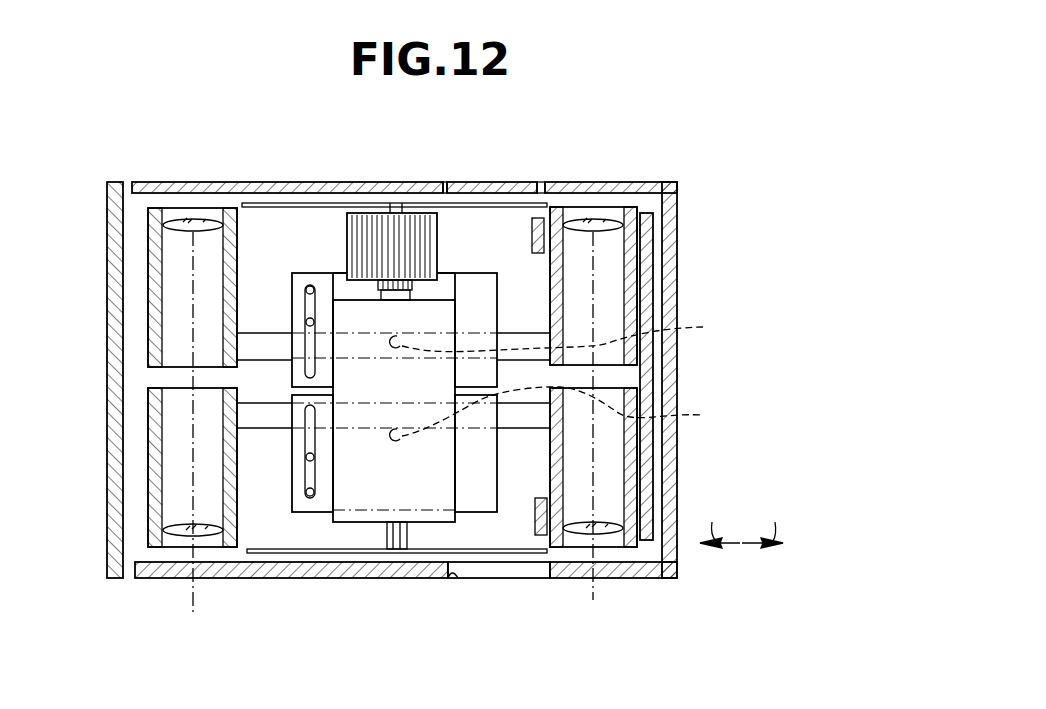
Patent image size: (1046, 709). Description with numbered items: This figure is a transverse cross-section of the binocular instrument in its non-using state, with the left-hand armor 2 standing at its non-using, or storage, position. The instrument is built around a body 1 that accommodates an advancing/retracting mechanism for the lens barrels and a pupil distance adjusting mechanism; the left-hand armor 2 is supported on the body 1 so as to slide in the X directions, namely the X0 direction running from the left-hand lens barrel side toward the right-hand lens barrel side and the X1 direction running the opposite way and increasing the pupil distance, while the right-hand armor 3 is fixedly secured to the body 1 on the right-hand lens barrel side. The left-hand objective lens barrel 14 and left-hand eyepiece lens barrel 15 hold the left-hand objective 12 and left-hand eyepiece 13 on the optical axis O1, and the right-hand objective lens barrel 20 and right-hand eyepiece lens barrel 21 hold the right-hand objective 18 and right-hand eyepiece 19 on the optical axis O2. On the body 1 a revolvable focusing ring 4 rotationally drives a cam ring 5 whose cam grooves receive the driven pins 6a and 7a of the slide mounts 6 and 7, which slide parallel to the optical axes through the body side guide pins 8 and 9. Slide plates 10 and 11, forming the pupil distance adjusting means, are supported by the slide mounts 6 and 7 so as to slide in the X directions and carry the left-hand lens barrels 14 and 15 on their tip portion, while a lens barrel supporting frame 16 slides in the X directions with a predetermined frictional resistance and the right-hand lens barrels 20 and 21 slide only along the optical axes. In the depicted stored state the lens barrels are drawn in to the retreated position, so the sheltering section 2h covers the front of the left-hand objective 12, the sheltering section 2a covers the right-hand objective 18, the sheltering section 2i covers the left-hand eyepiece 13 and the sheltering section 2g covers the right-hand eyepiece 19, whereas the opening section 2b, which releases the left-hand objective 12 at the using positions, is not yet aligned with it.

The binocular instrument body 1 is at (300, 204).
The left-hand armor 2 is at (406, 182).
The sheltering section 2a is at (160, 578).
The opening section 2b is at (458, 578).
The sheltering section 2g is at (165, 182).
The sheltering section 2h is at (633, 556).
The sheltering section 2i is at (562, 180).
The right-hand armor 3 is at (112, 350).
The focusing ring 4 is at (422, 236).
The cam ring 5 is at (345, 302).
The slide mount 6 is at (478, 500).
The driven pin 6a is at (565, 414).
The slide mount 7 is at (472, 290).
The driven pin 7a is at (563, 336).
The body side guide pin 8 is at (307, 500).
The body side guide pin 9 is at (292, 273).
The slide plate 10 is at (520, 425).
The slide plate 11 is at (510, 337).
The left-hand objective 12 is at (610, 535).
The left-hand eyepiece 13 is at (608, 220).
The left-hand objective lens barrel 14 is at (640, 580).
The left-hand eyepiece lens barrel 15 is at (632, 208).
The lens barrel supporting frame 16 is at (655, 235).
The right-hand objective 18 is at (178, 540).
The right-hand eyepiece 19 is at (199, 223).
The right-hand objective lens barrel 20 is at (150, 482).
The right-hand eyepiece lens barrel 21 is at (145, 300).
The optical axis O1 is at (597, 585).
The optical axis O2 is at (189, 441).
The X0 direction X0 is at (720, 522).
The X1 direction X1 is at (769, 522).